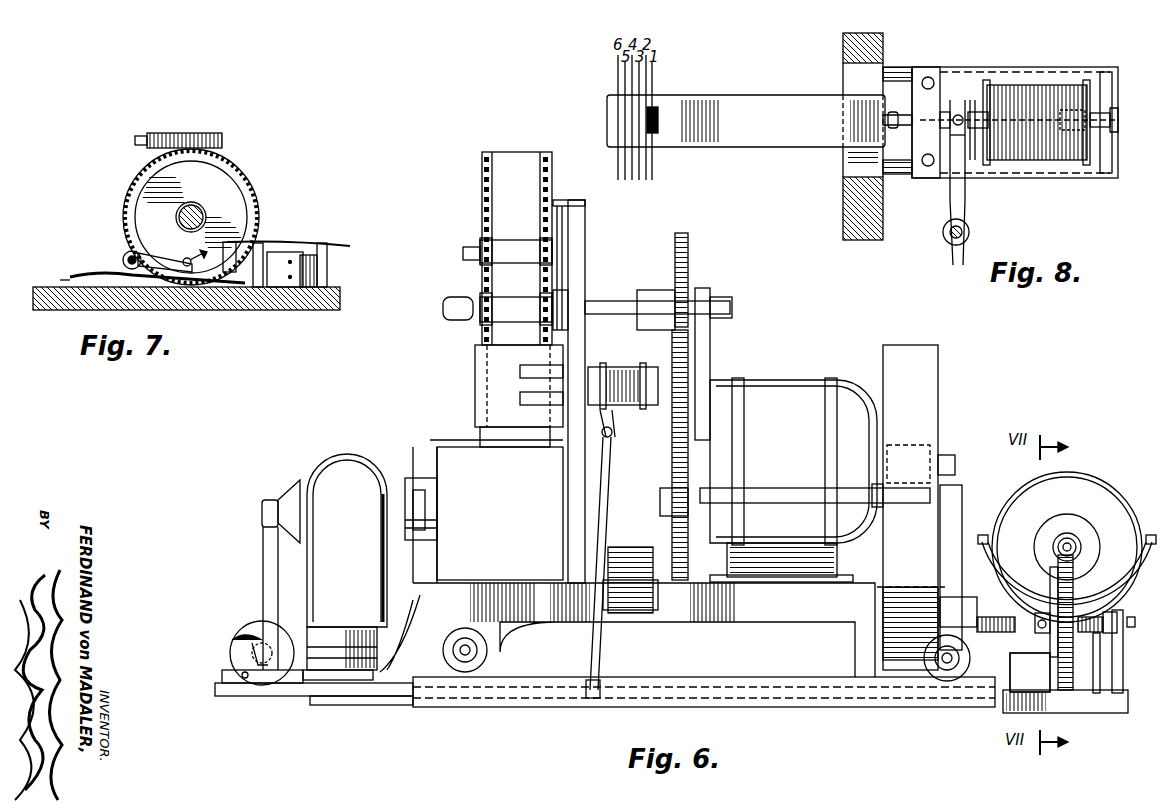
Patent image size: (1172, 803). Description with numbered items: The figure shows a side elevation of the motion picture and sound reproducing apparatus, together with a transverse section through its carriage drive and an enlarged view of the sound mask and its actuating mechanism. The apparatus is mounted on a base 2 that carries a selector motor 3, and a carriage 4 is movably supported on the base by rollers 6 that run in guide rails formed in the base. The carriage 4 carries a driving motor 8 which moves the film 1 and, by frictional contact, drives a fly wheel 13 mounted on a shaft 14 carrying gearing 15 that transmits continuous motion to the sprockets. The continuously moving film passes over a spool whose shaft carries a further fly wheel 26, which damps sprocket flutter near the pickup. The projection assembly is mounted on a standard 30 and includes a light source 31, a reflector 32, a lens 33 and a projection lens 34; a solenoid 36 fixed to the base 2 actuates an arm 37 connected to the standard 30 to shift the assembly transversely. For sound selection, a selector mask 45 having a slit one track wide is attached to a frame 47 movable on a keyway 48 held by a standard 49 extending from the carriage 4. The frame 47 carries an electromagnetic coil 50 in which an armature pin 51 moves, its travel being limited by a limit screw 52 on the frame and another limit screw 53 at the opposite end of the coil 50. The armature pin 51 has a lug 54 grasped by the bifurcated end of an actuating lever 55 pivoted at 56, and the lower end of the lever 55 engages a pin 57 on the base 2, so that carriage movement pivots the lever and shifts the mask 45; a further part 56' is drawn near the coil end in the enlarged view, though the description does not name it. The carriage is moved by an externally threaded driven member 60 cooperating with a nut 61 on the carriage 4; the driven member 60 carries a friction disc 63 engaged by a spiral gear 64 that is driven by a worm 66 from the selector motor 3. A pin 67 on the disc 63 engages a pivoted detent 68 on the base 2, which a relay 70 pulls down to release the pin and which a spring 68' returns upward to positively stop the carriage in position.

In FIG. 6, the film 1 is at (480, 192).
In FIG. 6, the base 2 is at (680, 688).
In FIG. 7, the base 2 is at (72, 300).
In FIG. 6, the selector motor 3 is at (1092, 480).
In FIG. 6, the carriage 4 is at (775, 605).
In FIG. 6, the roller 6 is at (464, 636).
In FIG. 6, the driving motor 8 is at (768, 385).
In FIG. 6, the fly wheel 13 is at (937, 390).
In FIG. 6, the shaft 14 is at (780, 490).
In FIG. 6, the gearing 15 is at (692, 272).
In FIG. 6, the fly wheel 26 is at (630, 615).
In FIG. 6, the standard 30 is at (414, 598).
In FIG. 6, the light source 31 is at (340, 470).
In FIG. 6, the reflector 32 is at (296, 484).
In FIG. 6, the lens 33 is at (418, 480).
In FIG. 6, the projection lens 34 is at (507, 432).
In FIG. 6, the solenoid 36 is at (236, 640).
In FIG. 6, the arm 37 is at (252, 658).
In FIG. 8, the selector mask 45 is at (765, 100).
In FIG. 8, the frame 47 is at (930, 70).
In FIG. 8, the keyway 48 is at (897, 68).
In FIG. 6, the standard 49 is at (587, 255).
In FIG. 8, the standard 49 is at (845, 193).
In FIG. 8, the electromagnetic coil 50 is at (1055, 90).
In FIG. 8, the armature pin 51 is at (980, 98).
In FIG. 8, the limit screw 52 is at (863, 157).
In FIG. 8, the limit screw 53 is at (1120, 115).
In FIG. 8, the lug 54 is at (958, 112).
In FIG. 6, the actuating lever 55 is at (592, 655).
In FIG. 8, the actuating lever 55 is at (965, 208).
In FIG. 6, the pivot 56 is at (623, 400).
In FIG. 8, the pivot 56 is at (975, 231).
In FIG. 8, the spring 56' is at (1091, 85).
In FIG. 6, the pin 57 is at (590, 700).
In FIG. 6, the driven member 60 is at (1010, 652).
In FIG. 6, the nut 61 is at (975, 605).
In FIG. 6, the disc 63 is at (1055, 578).
In FIG. 7, the disc 63 is at (238, 212).
In FIG. 6, the spiral gear 64 is at (1085, 575).
In FIG. 7, the spiral gear 64 is at (248, 182).
In FIG. 6, the worm 66 is at (1070, 545).
In FIG. 7, the worm 66 is at (196, 132).
In FIG. 7, the pin 67 is at (190, 258).
In FIG. 7, the detent 68 is at (138, 241).
In FIG. 7, the spring 68' is at (152, 259).
In FIG. 6, the relay 70 is at (1047, 692).
In FIG. 7, the relay 70 is at (310, 250).